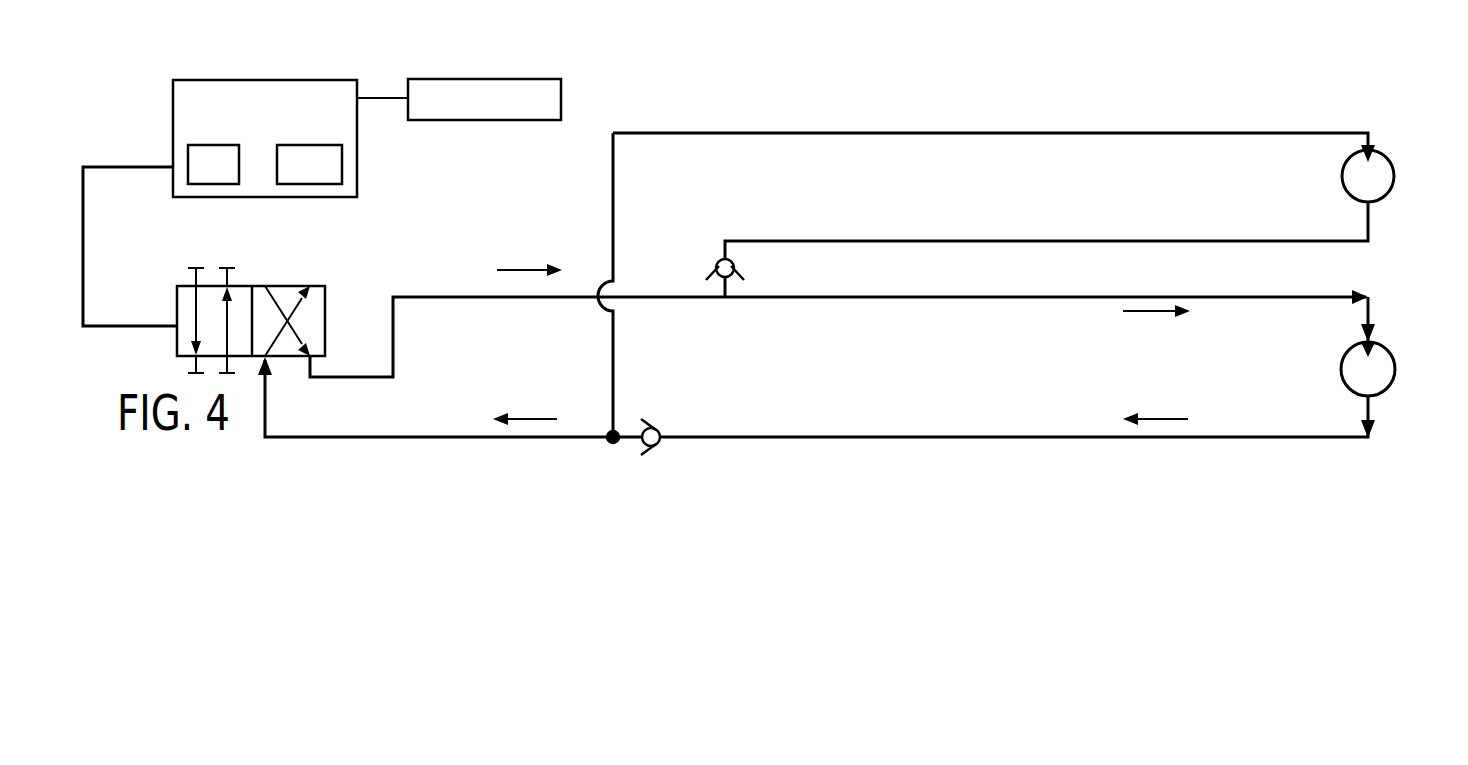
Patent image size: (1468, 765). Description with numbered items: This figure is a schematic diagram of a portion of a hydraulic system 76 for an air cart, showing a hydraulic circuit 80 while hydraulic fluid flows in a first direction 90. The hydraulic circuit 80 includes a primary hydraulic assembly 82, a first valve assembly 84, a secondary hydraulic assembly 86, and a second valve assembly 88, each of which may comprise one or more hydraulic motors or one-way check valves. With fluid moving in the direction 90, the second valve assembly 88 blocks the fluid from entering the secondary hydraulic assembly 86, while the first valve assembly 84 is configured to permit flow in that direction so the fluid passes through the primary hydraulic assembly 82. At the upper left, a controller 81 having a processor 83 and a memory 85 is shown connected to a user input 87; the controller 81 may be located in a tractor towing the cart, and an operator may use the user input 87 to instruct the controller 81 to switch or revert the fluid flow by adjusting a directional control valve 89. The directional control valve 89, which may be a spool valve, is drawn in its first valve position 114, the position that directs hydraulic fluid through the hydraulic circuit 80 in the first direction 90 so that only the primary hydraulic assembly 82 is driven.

The hydraulic system 76 is at (157, 55).
The hydraulic circuit 80 is at (1374, 272).
The controller 81 is at (173, 136).
The primary hydraulic assembly 82 is at (1386, 353).
The processor 83 is at (211, 197).
The first valve assembly 84 is at (659, 429).
The memory 85 is at (316, 197).
The secondary hydraulic assembly 86 is at (1386, 160).
The user input 87 is at (483, 120).
The second valve assembly 88 is at (736, 266).
The directional control valve 89 is at (177, 298).
The first direction 90 is at (523, 270).
The first valve position 114 is at (336, 399).